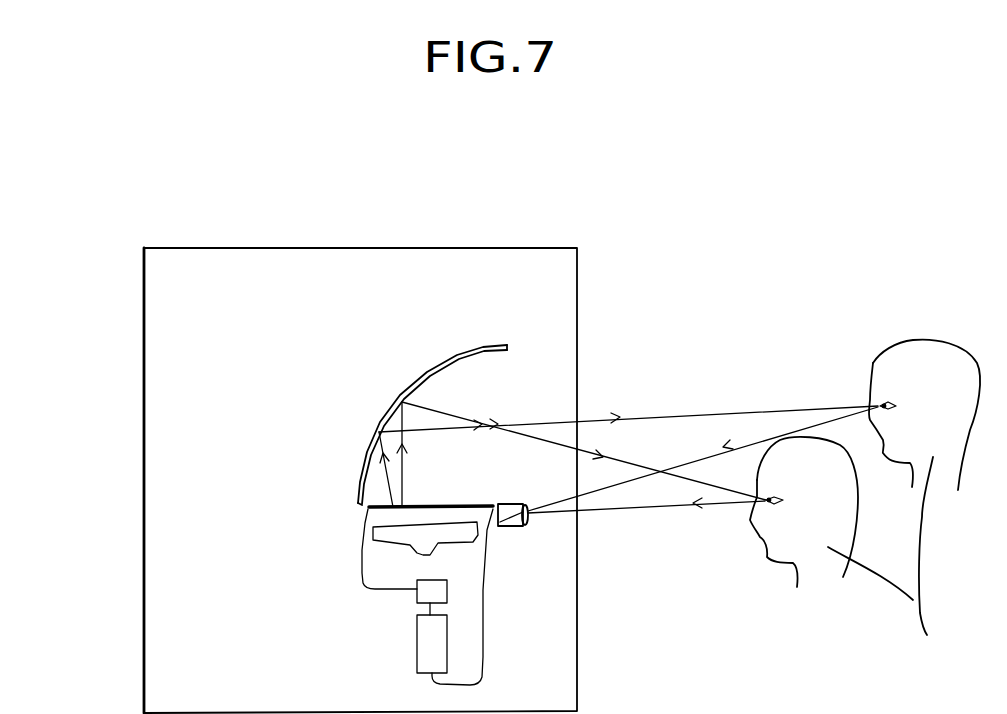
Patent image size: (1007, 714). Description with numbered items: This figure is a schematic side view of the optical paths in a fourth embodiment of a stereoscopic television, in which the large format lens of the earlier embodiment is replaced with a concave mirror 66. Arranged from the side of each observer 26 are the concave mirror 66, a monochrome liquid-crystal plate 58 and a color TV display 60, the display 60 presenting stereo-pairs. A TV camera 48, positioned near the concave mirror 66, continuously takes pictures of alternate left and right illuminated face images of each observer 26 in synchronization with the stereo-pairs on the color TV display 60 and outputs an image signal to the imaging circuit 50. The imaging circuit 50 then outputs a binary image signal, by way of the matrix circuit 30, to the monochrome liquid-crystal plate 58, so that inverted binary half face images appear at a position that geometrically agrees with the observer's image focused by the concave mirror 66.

The concave mirror 66 is at (485, 345).
The monochrome liquid-crystal plate 58 is at (453, 503).
The color TV display 60 is at (387, 534).
The matrix circuit 30 is at (417, 595).
The imaging circuit 50 is at (423, 653).
The TV camera 48 is at (518, 528).
The observer 26 is at (865, 506).